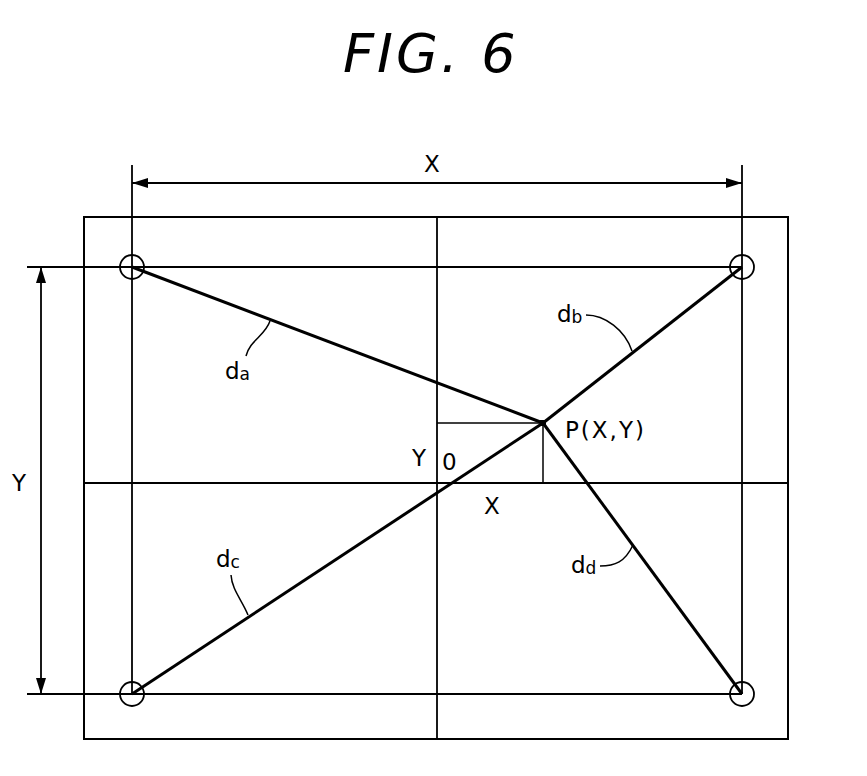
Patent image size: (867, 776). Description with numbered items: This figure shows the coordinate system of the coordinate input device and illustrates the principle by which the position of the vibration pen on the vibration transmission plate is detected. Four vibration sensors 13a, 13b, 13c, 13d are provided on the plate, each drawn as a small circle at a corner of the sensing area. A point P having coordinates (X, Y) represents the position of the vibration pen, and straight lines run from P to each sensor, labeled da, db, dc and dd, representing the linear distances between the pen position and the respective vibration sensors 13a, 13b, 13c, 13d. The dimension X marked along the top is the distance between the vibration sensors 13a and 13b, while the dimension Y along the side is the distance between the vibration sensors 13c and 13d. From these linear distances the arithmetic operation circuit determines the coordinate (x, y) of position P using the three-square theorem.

The vibration sensor 13a is at (139, 258).
The vibration sensor 13b is at (735, 259).
The vibration sensor 13c is at (142, 703).
The vibration sensor 13d is at (734, 702).